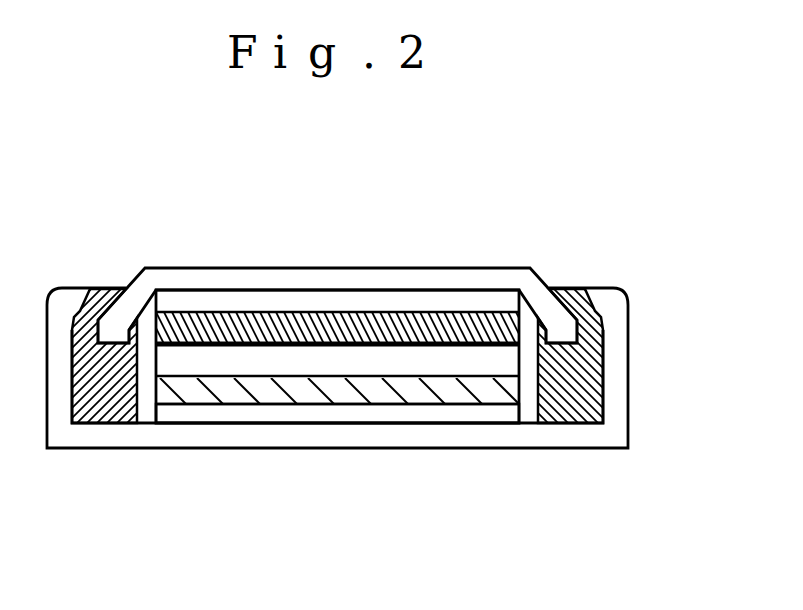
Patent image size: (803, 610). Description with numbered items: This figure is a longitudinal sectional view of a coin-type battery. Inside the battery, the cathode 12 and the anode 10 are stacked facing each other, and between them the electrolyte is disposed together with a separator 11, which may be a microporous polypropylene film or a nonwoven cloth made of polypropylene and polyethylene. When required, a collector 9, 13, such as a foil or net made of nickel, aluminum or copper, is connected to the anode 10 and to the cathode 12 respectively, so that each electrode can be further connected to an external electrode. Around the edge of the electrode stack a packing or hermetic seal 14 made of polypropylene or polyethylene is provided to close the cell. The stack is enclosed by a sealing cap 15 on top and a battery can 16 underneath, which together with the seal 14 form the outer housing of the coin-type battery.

The collector 9 is at (498, 300).
The anode 10 is at (522, 312).
The separator 11 is at (480, 352).
The cathode 12 is at (520, 383).
The collector 13 is at (470, 413).
The packing or hermetic seal 14 is at (105, 283).
The sealing plate 15 is at (328, 278).
The battery can 16 is at (343, 440).